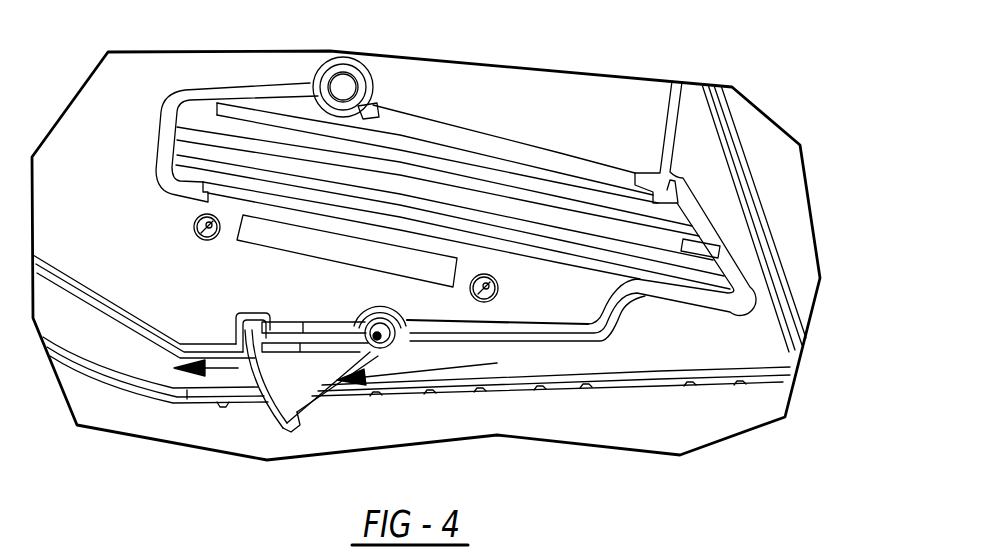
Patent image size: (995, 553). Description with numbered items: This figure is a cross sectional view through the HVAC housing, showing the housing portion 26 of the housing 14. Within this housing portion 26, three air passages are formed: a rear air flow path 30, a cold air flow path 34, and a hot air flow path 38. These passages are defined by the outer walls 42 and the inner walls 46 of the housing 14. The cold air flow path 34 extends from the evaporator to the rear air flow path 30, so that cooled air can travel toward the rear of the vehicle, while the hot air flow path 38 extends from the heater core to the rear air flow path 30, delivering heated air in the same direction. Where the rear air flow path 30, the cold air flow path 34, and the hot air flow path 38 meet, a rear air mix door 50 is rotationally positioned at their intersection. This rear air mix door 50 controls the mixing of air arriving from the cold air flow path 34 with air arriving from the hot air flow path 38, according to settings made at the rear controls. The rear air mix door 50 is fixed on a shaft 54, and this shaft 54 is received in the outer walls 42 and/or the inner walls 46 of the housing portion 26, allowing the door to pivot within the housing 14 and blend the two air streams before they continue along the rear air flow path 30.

The housing 14 is at (768, 405).
The housing portion 26 is at (618, 50).
The rear air flow path 30 is at (220, 367).
The cold air flow path 34 is at (487, 366).
The hot air flow path 38 is at (332, 320).
The outer walls 42 is at (722, 378).
The inner walls 46 is at (604, 318).
The rear air mix door 50 is at (286, 355).
The shaft 54 is at (517, 320).